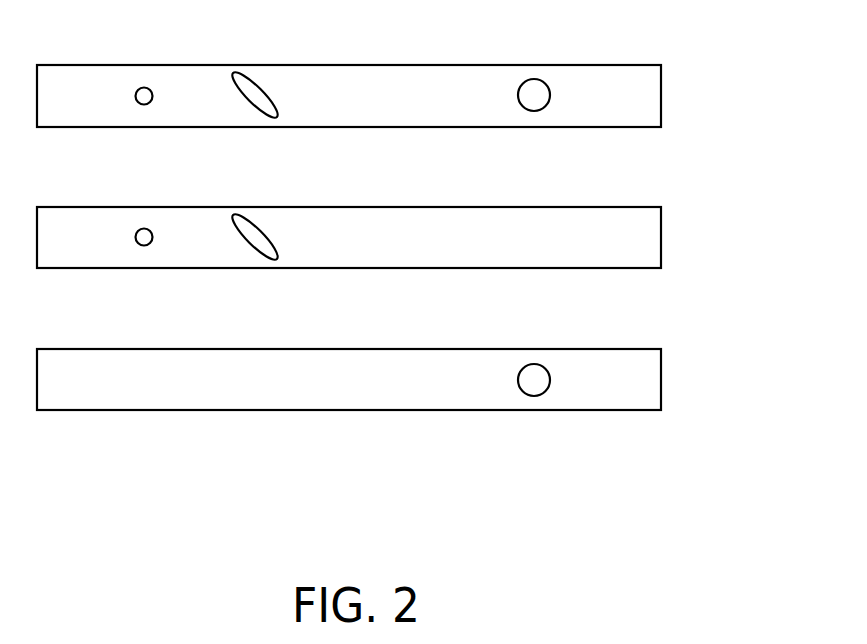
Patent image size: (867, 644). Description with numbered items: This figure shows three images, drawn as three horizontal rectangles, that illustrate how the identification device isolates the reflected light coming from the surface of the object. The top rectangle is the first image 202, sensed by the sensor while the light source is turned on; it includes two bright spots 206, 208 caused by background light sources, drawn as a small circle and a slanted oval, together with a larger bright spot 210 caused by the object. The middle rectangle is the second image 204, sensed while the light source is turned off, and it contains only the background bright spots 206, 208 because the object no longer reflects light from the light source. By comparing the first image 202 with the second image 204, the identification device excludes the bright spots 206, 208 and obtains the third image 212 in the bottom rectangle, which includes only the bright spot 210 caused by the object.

The first image 202 is at (661, 92).
The second image 204 is at (661, 234).
The third image 212 is at (661, 377).
The bright spot 206 is at (144, 87).
The bright spot 208 is at (253, 72).
The bright spot 210 is at (534, 79).